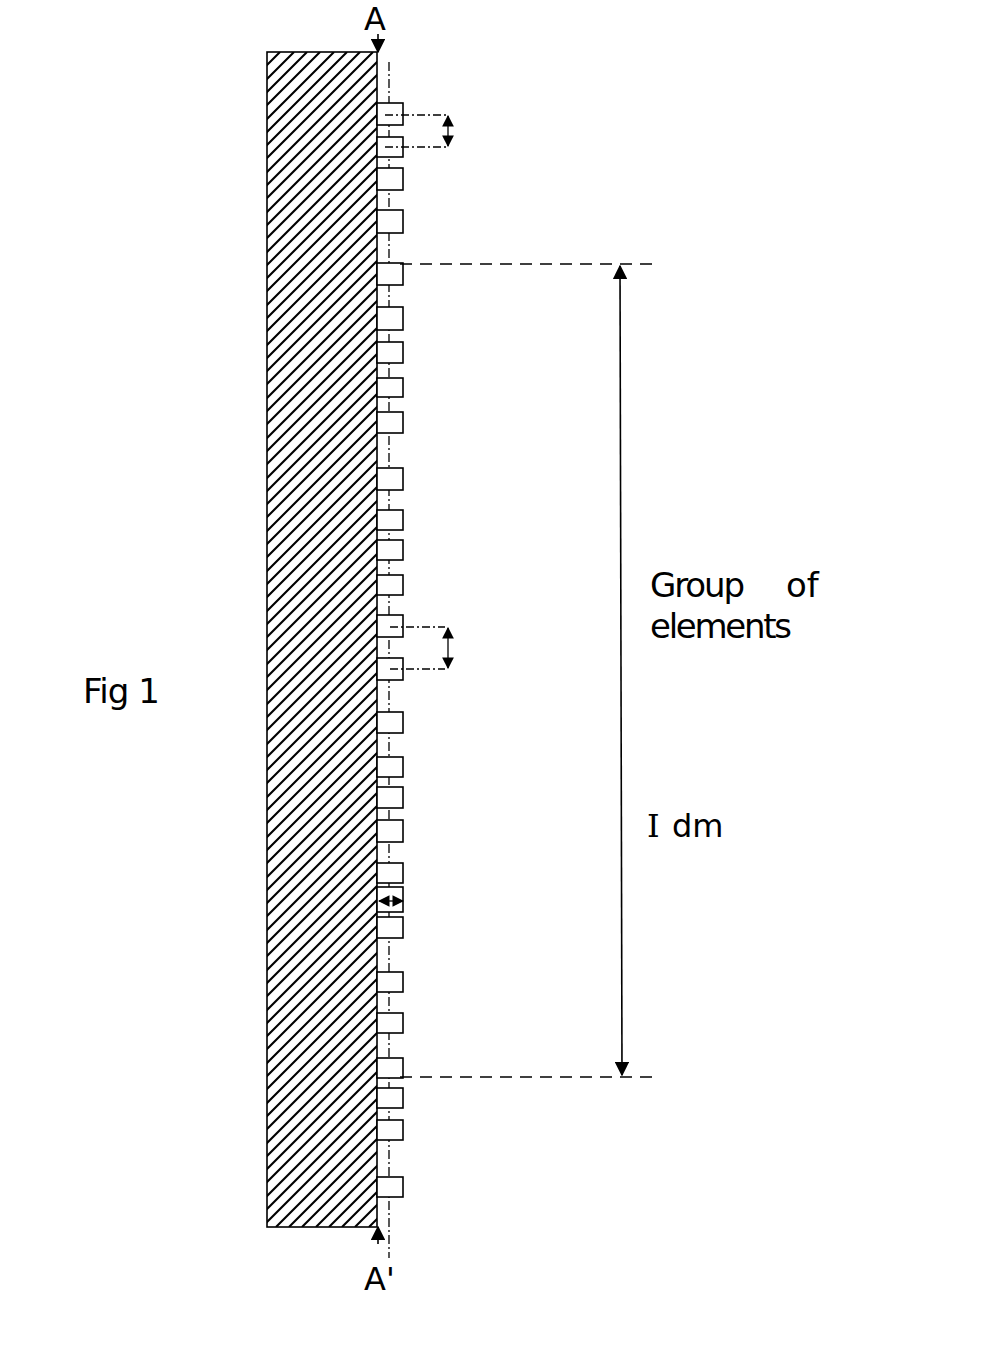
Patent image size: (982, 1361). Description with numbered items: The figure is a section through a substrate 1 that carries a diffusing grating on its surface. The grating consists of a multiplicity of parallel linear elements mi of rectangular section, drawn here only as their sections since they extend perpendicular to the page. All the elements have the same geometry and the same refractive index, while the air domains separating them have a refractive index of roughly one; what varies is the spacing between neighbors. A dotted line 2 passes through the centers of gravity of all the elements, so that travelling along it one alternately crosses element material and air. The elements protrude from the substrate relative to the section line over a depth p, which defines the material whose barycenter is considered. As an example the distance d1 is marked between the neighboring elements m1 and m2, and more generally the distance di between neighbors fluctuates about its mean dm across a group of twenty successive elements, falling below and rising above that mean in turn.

The substrate 1 is at (265, 223).
The dotted line 2 is at (462, 628).
The element m1 is at (407, 103).
The element m2 is at (407, 160).
The distance d1 is at (440, 135).
The element mi is at (408, 623).
The distance di is at (439, 648).
The depth p is at (397, 899).